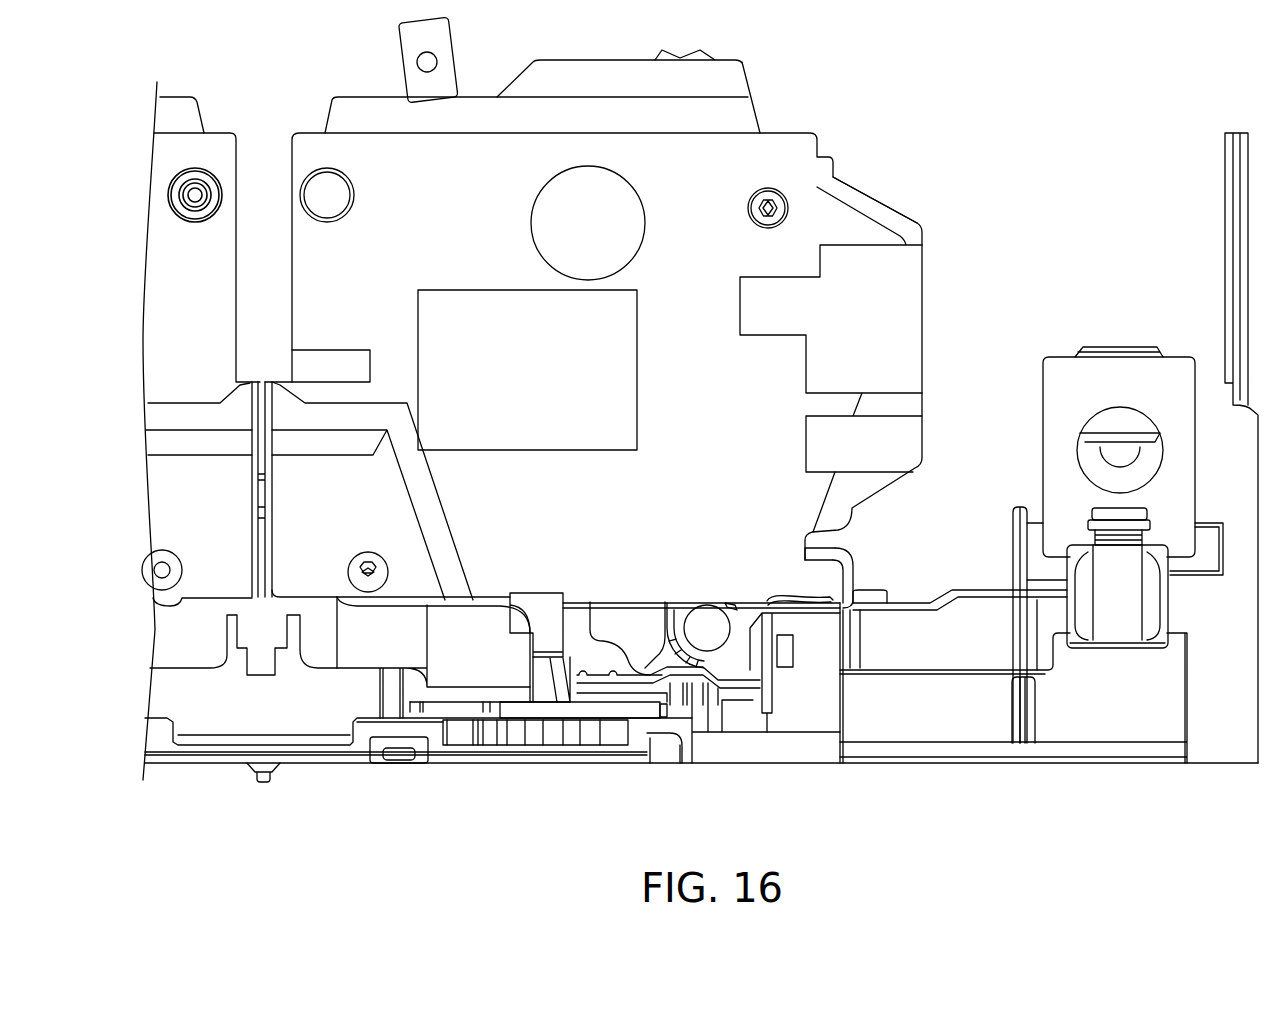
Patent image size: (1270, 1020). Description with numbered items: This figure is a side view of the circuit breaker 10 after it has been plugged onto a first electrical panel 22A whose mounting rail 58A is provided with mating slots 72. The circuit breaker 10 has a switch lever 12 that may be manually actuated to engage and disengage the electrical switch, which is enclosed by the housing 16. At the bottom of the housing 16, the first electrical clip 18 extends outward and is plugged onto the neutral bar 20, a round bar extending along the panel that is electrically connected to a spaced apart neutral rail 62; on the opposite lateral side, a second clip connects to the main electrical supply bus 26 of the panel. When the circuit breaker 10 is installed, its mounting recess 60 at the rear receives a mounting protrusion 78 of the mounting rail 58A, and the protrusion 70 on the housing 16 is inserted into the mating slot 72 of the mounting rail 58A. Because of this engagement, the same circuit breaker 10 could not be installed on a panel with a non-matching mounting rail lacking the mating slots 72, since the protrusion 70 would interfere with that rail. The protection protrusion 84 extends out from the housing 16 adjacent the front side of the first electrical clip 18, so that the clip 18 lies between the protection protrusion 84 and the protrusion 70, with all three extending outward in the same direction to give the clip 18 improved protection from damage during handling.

The circuit breaker 10 is at (212, 122).
The switch lever 12 is at (400, 68).
The housing 16 is at (845, 212).
The first electrical clip 18 is at (667, 662).
The neutral bar 20 is at (707, 628).
The first electrical panel 22A is at (1030, 188).
The main electrical supply bus 26 is at (260, 635).
The mounting rail 58A is at (855, 577).
The mounting recess 60 is at (795, 542).
The neutral rail 62 is at (1162, 610).
The protrusion 70 is at (810, 623).
The mating slot 72 is at (792, 598).
The mounting protrusion 78 is at (830, 548).
The protection protrusion 84 is at (623, 622).